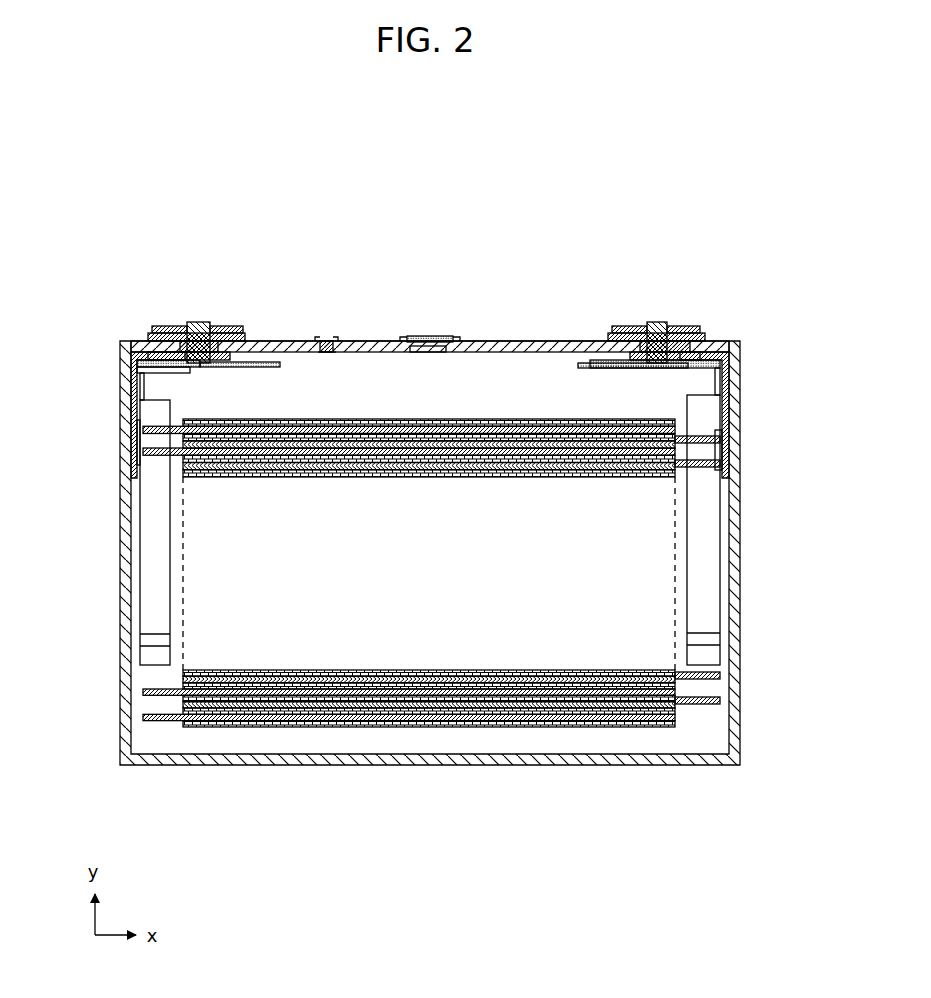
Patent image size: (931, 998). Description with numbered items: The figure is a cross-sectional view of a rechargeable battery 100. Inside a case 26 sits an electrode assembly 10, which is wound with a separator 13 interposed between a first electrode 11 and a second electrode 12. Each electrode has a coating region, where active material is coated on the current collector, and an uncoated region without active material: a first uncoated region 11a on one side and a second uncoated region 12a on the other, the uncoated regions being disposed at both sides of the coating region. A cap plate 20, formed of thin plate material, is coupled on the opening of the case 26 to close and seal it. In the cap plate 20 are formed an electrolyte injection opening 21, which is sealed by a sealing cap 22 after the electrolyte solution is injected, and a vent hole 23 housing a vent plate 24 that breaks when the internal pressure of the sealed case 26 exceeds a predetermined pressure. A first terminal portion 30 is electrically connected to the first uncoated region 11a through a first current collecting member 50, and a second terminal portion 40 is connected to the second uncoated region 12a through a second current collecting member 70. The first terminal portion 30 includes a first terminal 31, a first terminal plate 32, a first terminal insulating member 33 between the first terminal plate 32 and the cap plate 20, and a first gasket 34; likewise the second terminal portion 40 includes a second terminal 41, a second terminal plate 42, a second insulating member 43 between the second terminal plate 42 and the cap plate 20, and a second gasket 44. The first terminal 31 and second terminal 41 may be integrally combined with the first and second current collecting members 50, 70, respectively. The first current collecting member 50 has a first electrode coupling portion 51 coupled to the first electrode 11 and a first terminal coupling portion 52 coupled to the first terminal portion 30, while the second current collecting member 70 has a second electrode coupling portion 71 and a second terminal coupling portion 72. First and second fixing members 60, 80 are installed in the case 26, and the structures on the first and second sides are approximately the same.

The rechargeable battery 100 is at (538, 190).
The electrode assembly 10 is at (431, 621).
The first electrode 11 is at (236, 718).
The first uncoated region 11a is at (158, 722).
The second electrode 12 is at (312, 706).
The second uncoated region 12a is at (690, 705).
The separator 13 is at (430, 700).
The cap plate 20 is at (483, 338).
The electrolyte injection opening 21 is at (328, 352).
The sealing cap 22 is at (329, 341).
The vent hole 23 is at (428, 352).
The vent plate 24 is at (428, 336).
The case 26 is at (740, 625).
The first terminal portion 30 is at (248, 263).
The first terminal 31 is at (200, 322).
The first terminal plate 32 is at (170, 326).
The first terminal insulating member 33 is at (150, 352).
The first gasket 34 is at (232, 333).
The second terminal portion 40 is at (718, 259).
The second terminal 41 is at (655, 322).
The second terminal plate 42 is at (683, 326).
The second insulating member 43 is at (703, 333).
The second gasket 44 is at (620, 326).
The first current collecting member 50 is at (128, 465).
The first electrode coupling portion 51 is at (138, 434).
The first terminal coupling portion 52 is at (145, 372).
The first fixing member 60 is at (128, 360).
The second current collecting member 70 is at (732, 414).
The second electrode coupling portion 71 is at (724, 445).
The second terminal coupling portion 72 is at (717, 353).
The second fixing member 80 is at (732, 357).